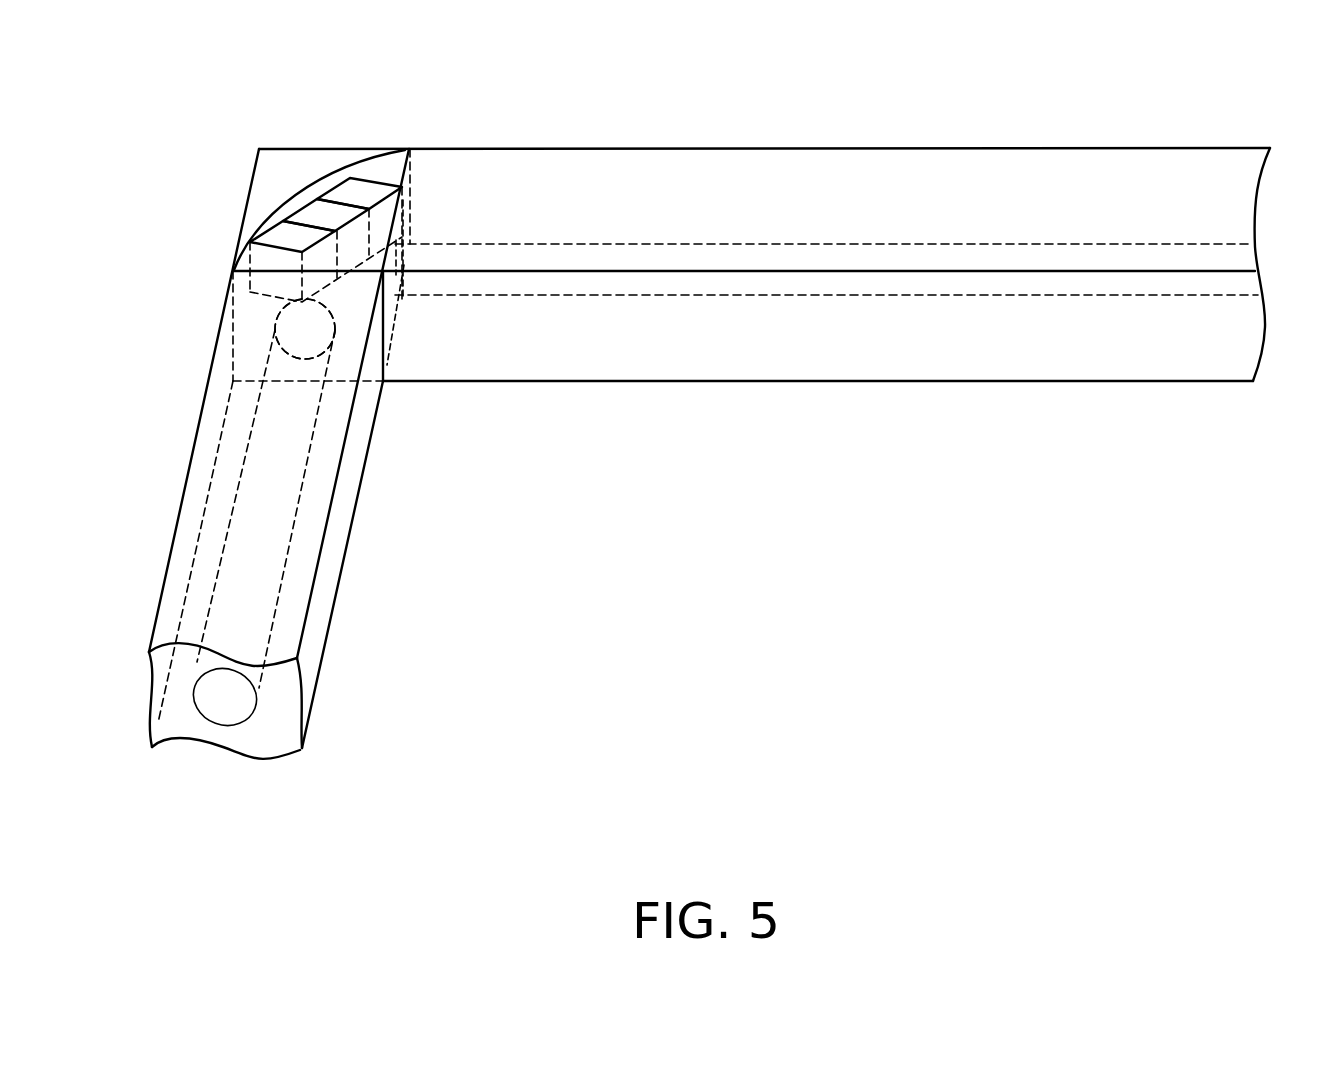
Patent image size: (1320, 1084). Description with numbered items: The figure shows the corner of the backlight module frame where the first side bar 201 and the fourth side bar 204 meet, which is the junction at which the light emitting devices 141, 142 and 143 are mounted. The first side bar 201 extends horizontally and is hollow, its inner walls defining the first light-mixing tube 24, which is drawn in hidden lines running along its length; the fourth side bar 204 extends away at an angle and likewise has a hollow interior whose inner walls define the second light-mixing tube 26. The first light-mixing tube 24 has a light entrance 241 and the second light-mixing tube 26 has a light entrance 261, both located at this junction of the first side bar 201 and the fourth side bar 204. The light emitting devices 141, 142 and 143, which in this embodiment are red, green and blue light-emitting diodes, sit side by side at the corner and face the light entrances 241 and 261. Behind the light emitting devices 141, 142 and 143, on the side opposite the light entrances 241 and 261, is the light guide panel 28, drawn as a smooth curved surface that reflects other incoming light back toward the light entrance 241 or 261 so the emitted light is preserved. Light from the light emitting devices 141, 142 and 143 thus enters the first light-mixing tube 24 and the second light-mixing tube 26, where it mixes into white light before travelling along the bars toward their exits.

The first side bar 201 is at (800, 158).
The fourth side bar 204 is at (203, 460).
The first light-mixing tube 24 is at (781, 285).
The light entrance 241 is at (395, 278).
The second light-mixing tube 26 is at (267, 530).
The light entrance 261 is at (302, 338).
The light guide panel 28 is at (352, 162).
The light emitting device 141 is at (278, 237).
The light emitting device 142 is at (311, 217).
The light emitting device 143 is at (343, 187).